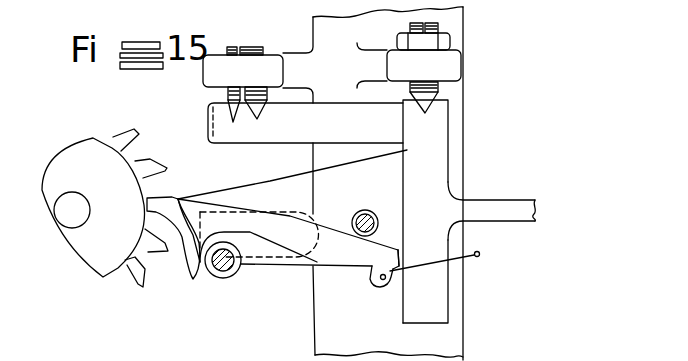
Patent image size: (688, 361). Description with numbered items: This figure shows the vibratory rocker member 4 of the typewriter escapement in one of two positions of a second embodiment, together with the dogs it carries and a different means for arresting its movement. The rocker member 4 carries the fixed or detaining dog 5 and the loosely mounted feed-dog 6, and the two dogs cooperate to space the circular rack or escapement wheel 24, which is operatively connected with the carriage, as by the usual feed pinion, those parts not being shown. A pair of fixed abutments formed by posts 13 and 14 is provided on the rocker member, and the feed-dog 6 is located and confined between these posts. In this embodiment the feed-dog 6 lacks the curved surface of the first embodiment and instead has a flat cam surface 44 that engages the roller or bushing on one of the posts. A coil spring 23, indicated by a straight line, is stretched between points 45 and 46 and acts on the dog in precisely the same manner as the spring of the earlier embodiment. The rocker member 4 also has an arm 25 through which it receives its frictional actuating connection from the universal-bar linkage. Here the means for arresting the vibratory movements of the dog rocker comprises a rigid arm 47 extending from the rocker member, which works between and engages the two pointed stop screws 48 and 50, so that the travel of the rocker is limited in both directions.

The vibratory rocker member 4 is at (428, 147).
The fixed or detaining dog 5 is at (180, 224).
The loose or floating feed-dog 6 is at (190, 197).
The post 13 is at (227, 243).
The post 14 is at (363, 211).
The coil spring 23 is at (414, 260).
The circular rack or escapement wheel 24 is at (97, 243).
The arm 25 is at (492, 206).
The flat cam surface 44 is at (387, 242).
The point 45 is at (382, 280).
The point 46 is at (485, 256).
The rigid arm 47 is at (305, 123).
The pointed stop screw 48 is at (229, 96).
The pointed stop screw 50 is at (261, 113).